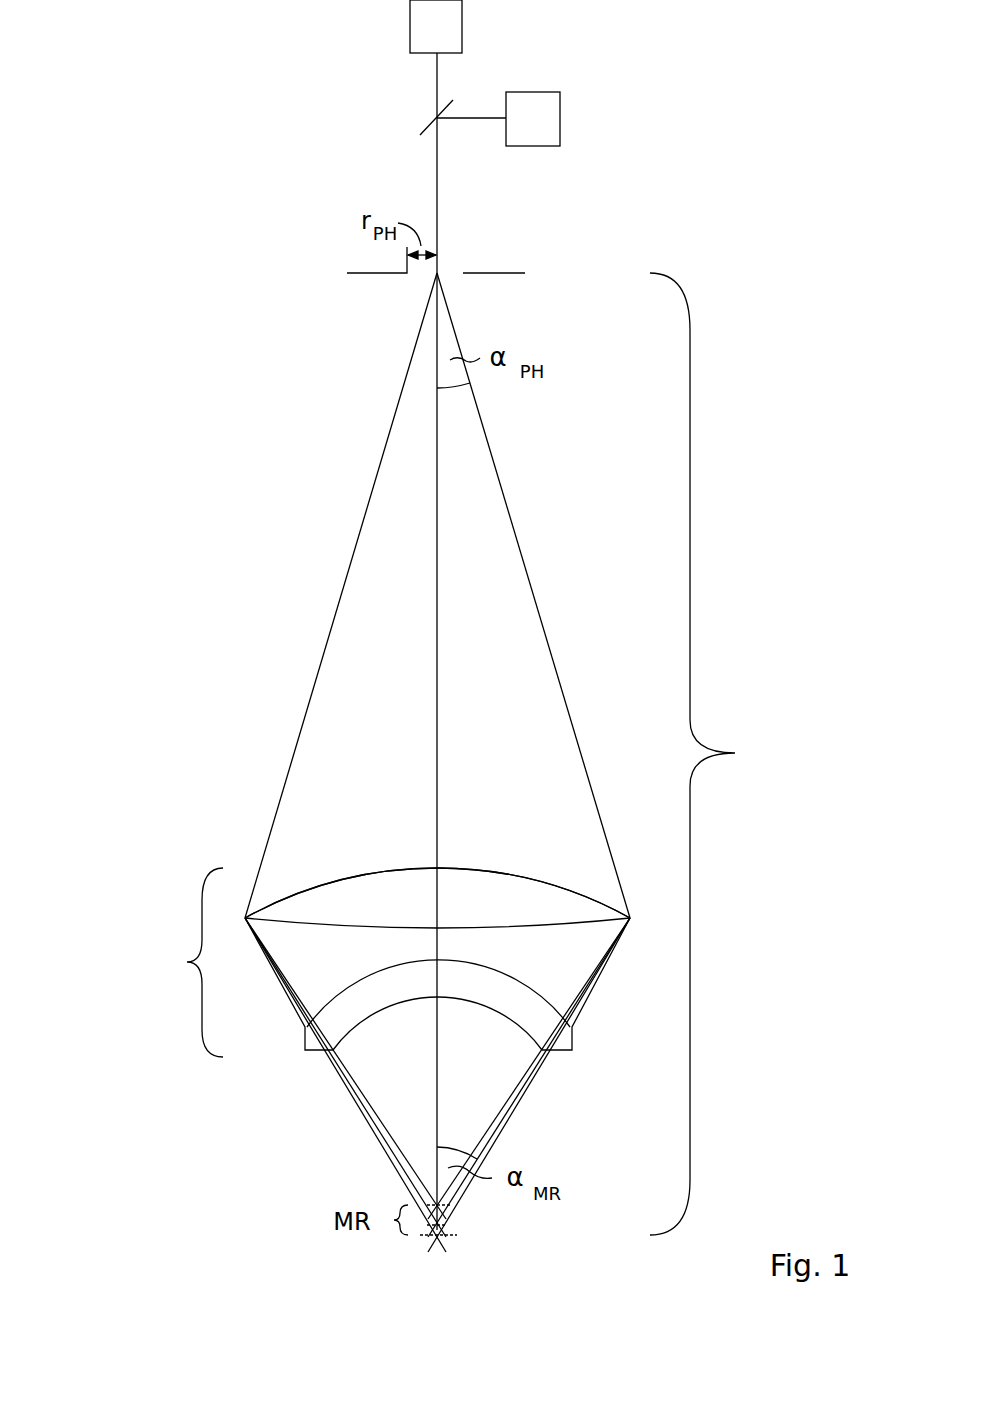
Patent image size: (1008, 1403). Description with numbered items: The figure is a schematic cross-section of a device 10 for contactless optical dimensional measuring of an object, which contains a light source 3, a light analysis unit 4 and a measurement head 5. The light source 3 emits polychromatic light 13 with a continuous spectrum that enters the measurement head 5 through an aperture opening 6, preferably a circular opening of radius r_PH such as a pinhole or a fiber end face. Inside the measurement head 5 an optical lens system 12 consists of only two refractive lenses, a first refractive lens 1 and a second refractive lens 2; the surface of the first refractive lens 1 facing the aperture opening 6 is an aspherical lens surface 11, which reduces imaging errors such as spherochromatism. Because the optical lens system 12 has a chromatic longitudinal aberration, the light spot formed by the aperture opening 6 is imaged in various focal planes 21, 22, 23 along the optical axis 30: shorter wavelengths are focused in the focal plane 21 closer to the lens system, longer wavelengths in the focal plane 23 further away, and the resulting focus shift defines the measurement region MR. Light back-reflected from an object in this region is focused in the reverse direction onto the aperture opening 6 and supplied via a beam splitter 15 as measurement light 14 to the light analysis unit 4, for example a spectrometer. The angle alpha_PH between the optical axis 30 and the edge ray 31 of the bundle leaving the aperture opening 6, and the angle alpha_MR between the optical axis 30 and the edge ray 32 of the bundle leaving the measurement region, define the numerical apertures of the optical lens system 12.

The first refractive lens 1 is at (520, 897).
The second refractive lens 2 is at (507, 990).
The light source 3 is at (445, 27).
The light analysis unit 4 is at (543, 119).
The measurement head 5 is at (715, 754).
The aperture opening 6 is at (452, 266).
The device for contactless optical dimensional measuring of an object 10 is at (211, 264).
The aspherical lens surface 11 is at (390, 870).
The optical lens system 12 is at (173, 962).
The polychromatic light 13 is at (432, 80).
The measurement light 14 is at (467, 117).
The beam splitter 15 is at (420, 126).
The focal plane 21 is at (450, 1210).
The focal plane 22 is at (443, 1230).
The focal plane 23 is at (429, 1240).
The optical axis 30 is at (442, 675).
The edge ray 31 is at (522, 558).
The edge ray 32 is at (500, 1128).